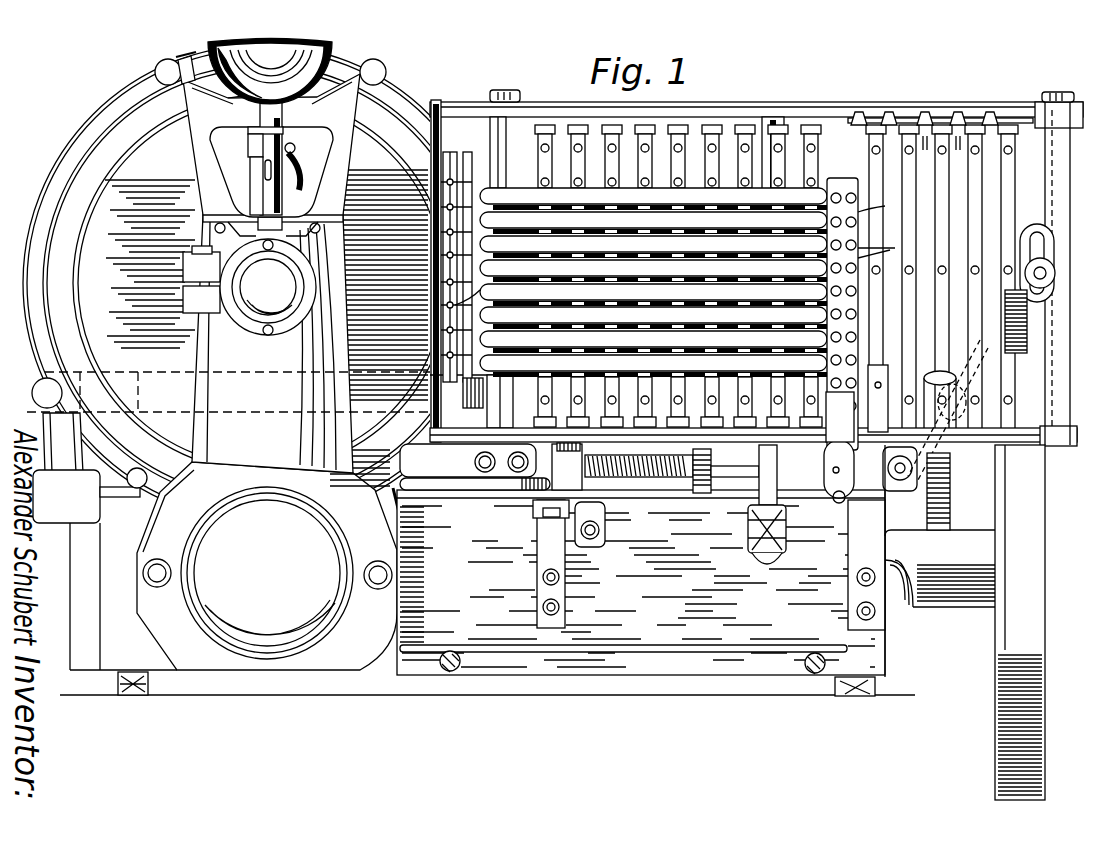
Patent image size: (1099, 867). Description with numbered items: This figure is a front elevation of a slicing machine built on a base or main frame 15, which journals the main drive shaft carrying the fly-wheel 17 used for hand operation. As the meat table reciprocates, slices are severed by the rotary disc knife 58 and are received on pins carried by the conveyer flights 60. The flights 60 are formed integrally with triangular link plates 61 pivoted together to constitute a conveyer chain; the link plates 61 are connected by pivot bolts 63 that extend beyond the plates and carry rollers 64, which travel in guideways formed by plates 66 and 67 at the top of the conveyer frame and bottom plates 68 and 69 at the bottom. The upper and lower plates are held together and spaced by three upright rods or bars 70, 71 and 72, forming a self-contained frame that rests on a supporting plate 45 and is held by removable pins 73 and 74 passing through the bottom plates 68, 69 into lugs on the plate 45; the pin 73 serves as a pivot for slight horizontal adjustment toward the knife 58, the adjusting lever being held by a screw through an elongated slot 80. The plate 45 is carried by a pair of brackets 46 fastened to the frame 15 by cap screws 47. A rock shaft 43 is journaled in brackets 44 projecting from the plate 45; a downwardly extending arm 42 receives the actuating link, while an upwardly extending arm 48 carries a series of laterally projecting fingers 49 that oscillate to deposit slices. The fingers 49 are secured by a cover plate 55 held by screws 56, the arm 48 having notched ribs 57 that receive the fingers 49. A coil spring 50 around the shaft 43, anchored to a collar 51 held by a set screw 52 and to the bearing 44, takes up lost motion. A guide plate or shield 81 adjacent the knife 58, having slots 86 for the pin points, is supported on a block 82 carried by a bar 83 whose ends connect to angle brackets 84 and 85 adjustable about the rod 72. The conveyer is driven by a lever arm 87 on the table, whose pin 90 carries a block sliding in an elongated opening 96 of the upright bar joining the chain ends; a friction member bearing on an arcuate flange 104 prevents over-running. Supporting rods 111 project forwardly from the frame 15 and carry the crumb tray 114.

The base or main frame 15 is at (892, 672).
The fly-wheel 17 is at (1020, 582).
The arm 42 is at (778, 500).
The rock shaft 43 is at (742, 478).
The brackets 44 is at (560, 480).
The supporting plate 45 is at (470, 488).
The brackets 46 is at (536, 530).
The cap screws 47 is at (560, 577).
The arm 48 is at (848, 462).
The fingers 49 is at (694, 250).
The coil spring 50 is at (658, 478).
The collar 51 is at (692, 484).
The set screw 52 is at (704, 494).
The cover plate 55 is at (858, 298).
The screws 56 is at (895, 248).
The ribs 57 is at (858, 208).
The rotary disc knife 58 is at (105, 210).
The conveyer flights 60 is at (580, 160).
The link plates 61 is at (958, 112).
The pivot bolts 63 is at (925, 152).
The rollers 64 is at (990, 112).
The plate 66 is at (859, 112).
The plate 67 is at (889, 112).
The bottom plate 68 is at (425, 378).
The bottom plate 69 is at (1058, 442).
The upright rod or bar 70 is at (1060, 355).
The upright rod or bar 71 is at (770, 128).
The upright rod or bar 72 is at (496, 142).
The removable pin 73 is at (888, 372).
The removable pin 74 is at (476, 455).
The elongated slot 80 is at (446, 232).
The guide plate or shield 81 is at (462, 195).
The block 82 is at (443, 268).
The bar 83 is at (436, 150).
The angle bracket 84 is at (438, 103).
The angle bracket 85 is at (440, 412).
The slots 86 is at (482, 296).
The lever arm 87 is at (1005, 325).
The pin 90 is at (1050, 272).
The elongated opening 96 is at (1040, 246).
The arcuate flange 104 is at (942, 372).
The supporting rods 111 is at (455, 670).
The crumb tray 114 is at (684, 644).